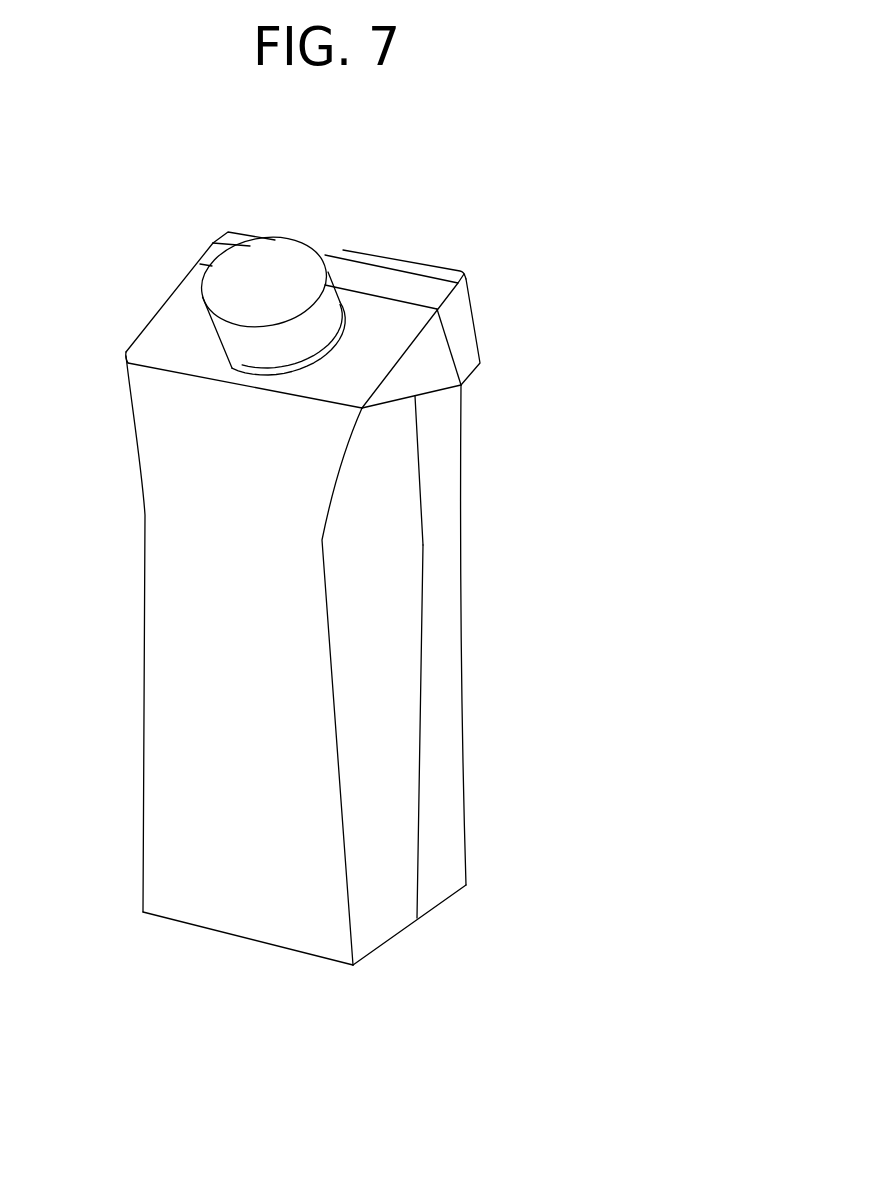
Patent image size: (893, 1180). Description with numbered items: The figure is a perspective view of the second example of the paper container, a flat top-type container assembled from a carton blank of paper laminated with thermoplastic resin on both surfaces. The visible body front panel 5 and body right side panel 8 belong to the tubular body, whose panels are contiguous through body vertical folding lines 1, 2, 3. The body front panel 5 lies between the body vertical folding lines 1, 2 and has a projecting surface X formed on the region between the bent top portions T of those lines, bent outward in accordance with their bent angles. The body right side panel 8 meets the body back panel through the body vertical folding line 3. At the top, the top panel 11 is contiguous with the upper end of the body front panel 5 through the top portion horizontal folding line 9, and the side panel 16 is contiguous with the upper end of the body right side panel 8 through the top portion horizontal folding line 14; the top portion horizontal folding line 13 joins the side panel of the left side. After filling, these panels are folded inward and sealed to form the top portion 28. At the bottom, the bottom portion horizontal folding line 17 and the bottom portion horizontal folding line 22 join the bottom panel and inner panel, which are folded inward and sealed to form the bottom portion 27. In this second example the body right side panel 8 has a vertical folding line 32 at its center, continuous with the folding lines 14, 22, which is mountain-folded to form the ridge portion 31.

The body vertical folding line 1 is at (335, 705).
The body vertical folding line 2 is at (145, 668).
The body vertical folding line 3 is at (460, 667).
The body front panel 5 is at (243, 771).
The body right side panel 8 is at (397, 747).
The top portion horizontal folding line 9 is at (285, 393).
The top panel 11 is at (165, 333).
The top portion horizontal folding line 13 is at (178, 285).
The top portion horizontal folding line 14 is at (412, 347).
The side panel 16 is at (437, 368).
The bottom portion horizontal folding line 17 is at (245, 938).
The bottom portion horizontal folding line 22 is at (390, 943).
The bottom portion 27 is at (436, 922).
The top portion 28 is at (412, 252).
The ridge portion 31 is at (423, 545).
The vertical folding line 32 is at (423, 573).
The bent top portion T is at (147, 507).
The projecting surface X is at (198, 531).